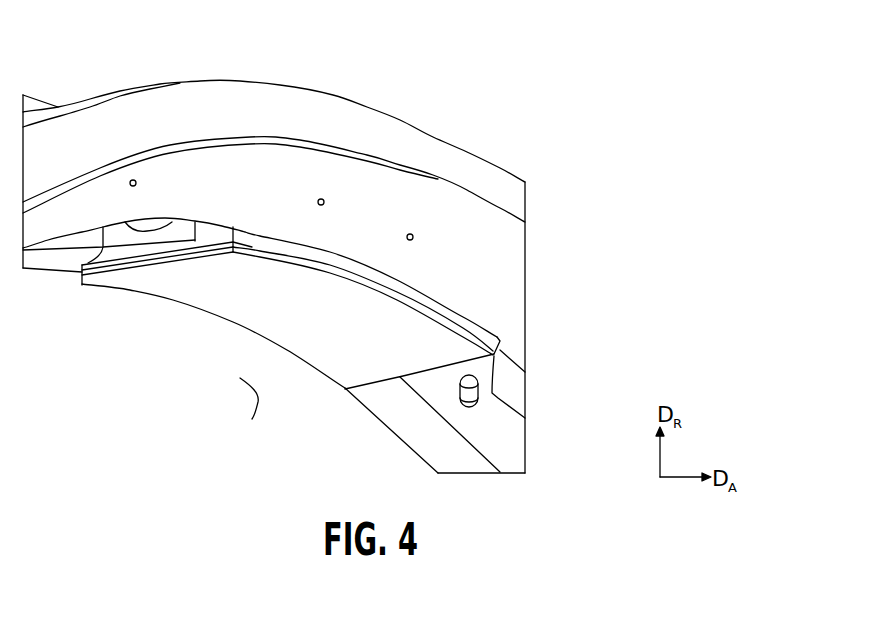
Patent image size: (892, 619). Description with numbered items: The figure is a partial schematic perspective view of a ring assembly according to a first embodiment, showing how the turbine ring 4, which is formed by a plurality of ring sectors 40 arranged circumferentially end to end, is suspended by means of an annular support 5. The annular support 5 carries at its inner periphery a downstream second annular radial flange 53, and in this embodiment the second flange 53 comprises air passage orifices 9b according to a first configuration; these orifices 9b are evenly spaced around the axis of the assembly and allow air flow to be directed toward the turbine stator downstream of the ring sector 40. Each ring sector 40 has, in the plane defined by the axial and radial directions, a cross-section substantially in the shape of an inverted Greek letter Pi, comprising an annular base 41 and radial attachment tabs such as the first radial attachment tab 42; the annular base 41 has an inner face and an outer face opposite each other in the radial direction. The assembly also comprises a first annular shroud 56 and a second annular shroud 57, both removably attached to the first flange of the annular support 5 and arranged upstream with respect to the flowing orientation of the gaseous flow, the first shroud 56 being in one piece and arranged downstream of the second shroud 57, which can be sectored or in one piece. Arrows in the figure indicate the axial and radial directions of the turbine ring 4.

The annular support 5 is at (490, 157).
The orifices 9b is at (197, 82).
The second annular radial flange 53 is at (518, 274).
The first radial attachment tab 42 is at (115, 274).
The annular base 41 is at (177, 298).
The ring sector 40 is at (289, 352).
The first annular shroud 56 is at (507, 447).
The second annular shroud 57 is at (458, 453).
The turbine ring 4 is at (247, 403).